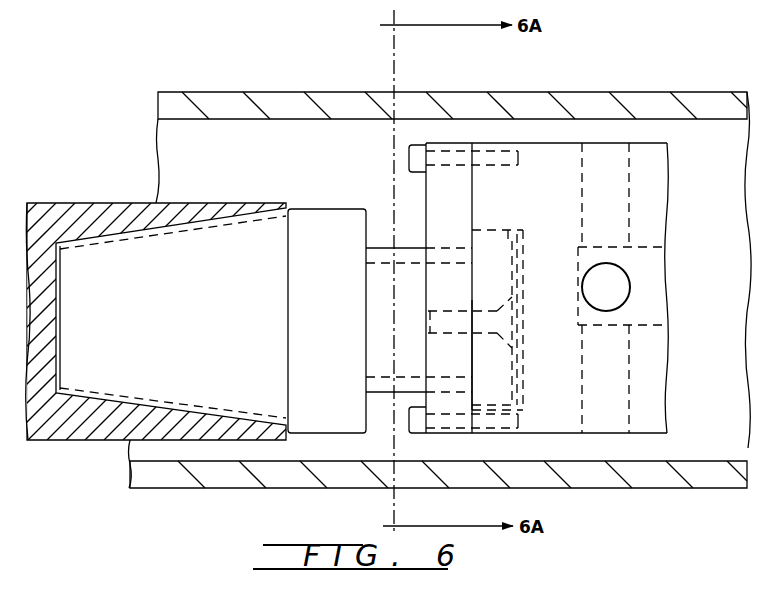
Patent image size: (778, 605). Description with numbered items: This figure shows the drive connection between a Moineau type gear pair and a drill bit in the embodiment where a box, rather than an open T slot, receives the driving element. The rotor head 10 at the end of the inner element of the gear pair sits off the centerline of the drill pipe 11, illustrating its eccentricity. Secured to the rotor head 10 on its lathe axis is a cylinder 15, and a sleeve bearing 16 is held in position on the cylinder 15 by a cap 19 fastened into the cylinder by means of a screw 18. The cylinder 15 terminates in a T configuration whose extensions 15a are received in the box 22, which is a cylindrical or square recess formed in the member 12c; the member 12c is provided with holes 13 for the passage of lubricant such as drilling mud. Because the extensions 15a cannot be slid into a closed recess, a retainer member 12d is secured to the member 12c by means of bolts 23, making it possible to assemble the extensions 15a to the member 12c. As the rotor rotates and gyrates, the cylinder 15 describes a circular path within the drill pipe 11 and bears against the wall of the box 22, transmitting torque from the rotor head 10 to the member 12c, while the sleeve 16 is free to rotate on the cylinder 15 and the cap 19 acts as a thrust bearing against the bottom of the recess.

The rotor head 10 is at (81, 203).
The drill pipe 11 is at (352, 70).
The member 12c is at (550, 168).
The retainer member 12d is at (432, 188).
The holes 13 is at (617, 199).
The cylinder 15 is at (413, 347).
The extensions 15a is at (492, 375).
The sleeve bearing 16 is at (374, 246).
The screw 18 is at (506, 313).
The cap 19 is at (524, 245).
The box 22 is at (485, 228).
The bolts 23 is at (413, 148).